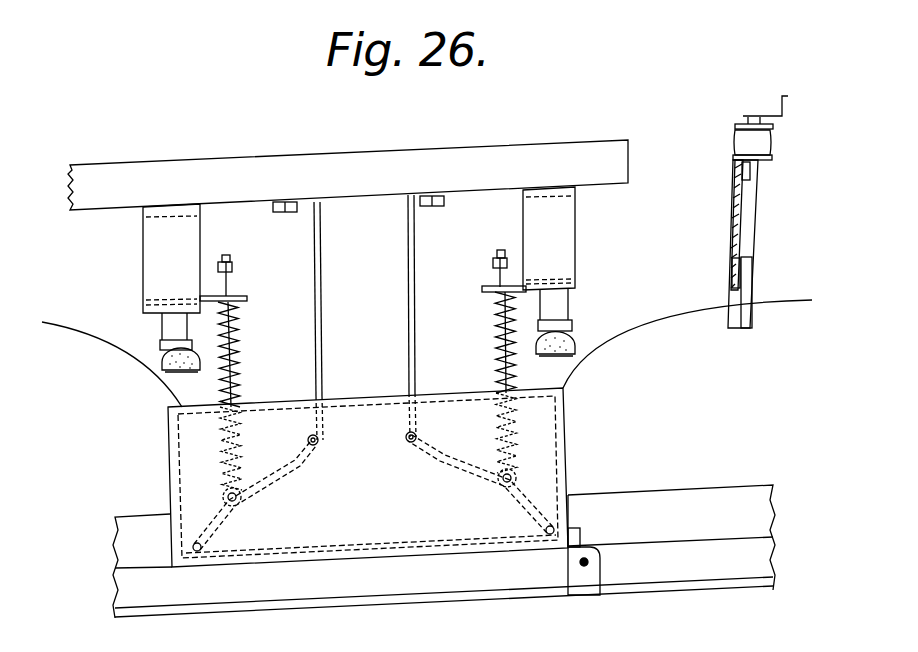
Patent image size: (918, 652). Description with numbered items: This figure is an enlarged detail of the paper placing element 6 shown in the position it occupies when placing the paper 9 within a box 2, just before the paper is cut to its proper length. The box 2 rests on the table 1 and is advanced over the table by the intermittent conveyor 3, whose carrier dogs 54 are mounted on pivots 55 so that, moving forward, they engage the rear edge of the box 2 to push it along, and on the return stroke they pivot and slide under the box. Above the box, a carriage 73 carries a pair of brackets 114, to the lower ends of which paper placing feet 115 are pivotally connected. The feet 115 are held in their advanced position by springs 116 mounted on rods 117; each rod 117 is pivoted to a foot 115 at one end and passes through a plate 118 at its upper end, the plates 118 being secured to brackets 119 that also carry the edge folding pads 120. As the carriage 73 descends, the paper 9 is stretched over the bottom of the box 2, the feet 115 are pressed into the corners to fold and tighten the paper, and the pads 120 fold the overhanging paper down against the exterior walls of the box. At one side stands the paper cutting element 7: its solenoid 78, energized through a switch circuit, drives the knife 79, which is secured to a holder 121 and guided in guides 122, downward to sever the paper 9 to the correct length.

The table 1 is at (750, 486).
The box 2 is at (566, 440).
The intermittent conveyor 3 is at (628, 556).
The paper placing element 6 is at (582, 152).
The paper cutting element 7 is at (762, 192).
The paper 9 is at (666, 316).
The carrier dog 54 is at (581, 534).
The pivot 55 is at (580, 563).
The carriage 73 is at (500, 158).
The solenoid 78 is at (770, 144).
The paper cutting knife 79 is at (740, 276).
The bracket 114 is at (408, 300).
The paper placing foot 115 is at (280, 490).
The spring 116 is at (239, 349).
The rod 117 is at (228, 280).
The plate 118 is at (247, 300).
The bracket 119 is at (165, 256).
The edge folding pad 120 is at (165, 363).
The holder 121 is at (740, 232).
The guide 122 is at (752, 293).